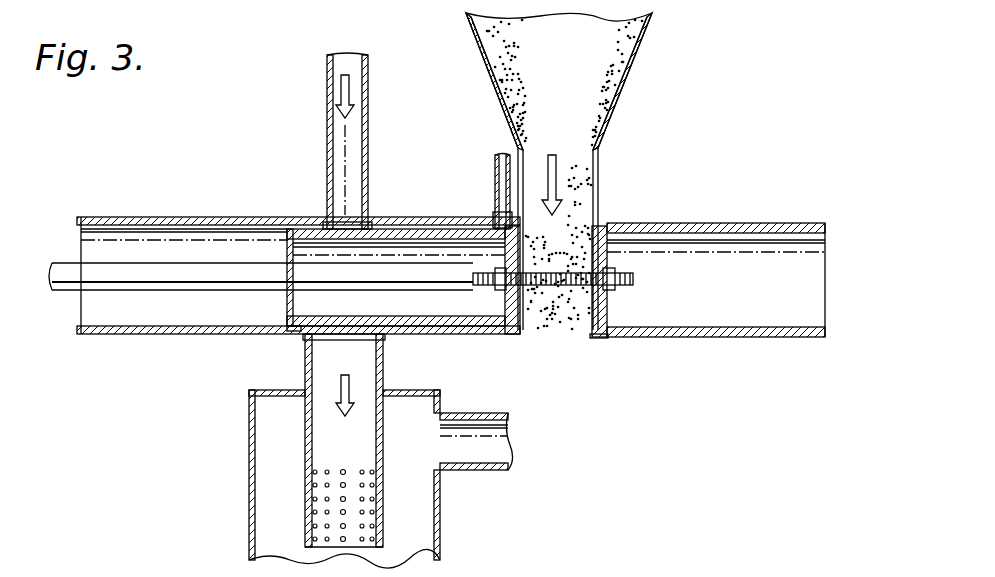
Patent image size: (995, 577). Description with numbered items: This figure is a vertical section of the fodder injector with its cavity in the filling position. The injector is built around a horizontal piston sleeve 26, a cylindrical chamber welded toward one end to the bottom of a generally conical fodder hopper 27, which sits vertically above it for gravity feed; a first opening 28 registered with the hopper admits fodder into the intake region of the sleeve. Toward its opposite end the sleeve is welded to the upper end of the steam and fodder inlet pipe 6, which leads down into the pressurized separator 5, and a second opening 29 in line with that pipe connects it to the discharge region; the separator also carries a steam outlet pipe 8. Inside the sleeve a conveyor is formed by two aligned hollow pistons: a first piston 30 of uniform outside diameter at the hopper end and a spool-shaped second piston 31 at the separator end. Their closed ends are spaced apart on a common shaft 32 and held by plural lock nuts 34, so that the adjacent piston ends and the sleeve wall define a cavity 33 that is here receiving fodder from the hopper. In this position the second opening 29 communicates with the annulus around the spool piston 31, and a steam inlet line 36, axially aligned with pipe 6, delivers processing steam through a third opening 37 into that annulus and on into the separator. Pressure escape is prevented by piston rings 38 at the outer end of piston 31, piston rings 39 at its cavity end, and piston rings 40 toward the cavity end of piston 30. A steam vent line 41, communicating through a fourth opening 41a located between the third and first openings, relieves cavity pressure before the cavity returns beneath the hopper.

The pressurized separator 5 is at (243, 505).
The steam and fodder inlet pipe 6 is at (384, 380).
The steam outlet pipe 8 is at (485, 413).
The piston sleeve 26 is at (176, 217).
The fodder hopper 27 is at (598, 190).
The first opening 28 is at (598, 222).
The second opening 29 is at (384, 340).
The first piston 30 is at (728, 330).
The second piston 31 is at (393, 236).
The shaft 32 is at (362, 285).
The cavity 33 is at (613, 310).
The lock nuts 34 is at (500, 290).
The steam inlet line 36 is at (368, 120).
The third opening 37 is at (330, 222).
The piston rings 38 is at (300, 334).
The piston rings 39 is at (506, 334).
The piston rings 40 is at (604, 338).
The steam vent line 41 is at (495, 170).
The fourth opening 41a is at (497, 213).